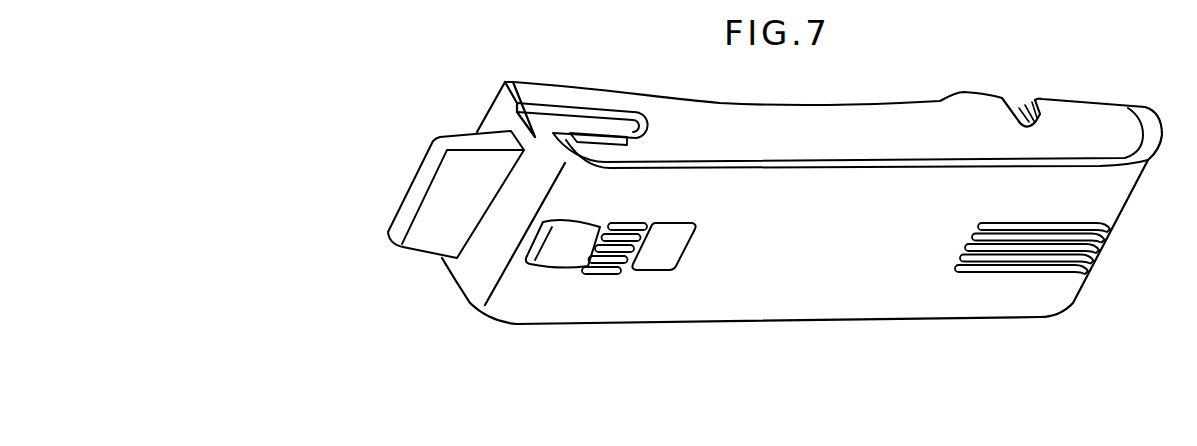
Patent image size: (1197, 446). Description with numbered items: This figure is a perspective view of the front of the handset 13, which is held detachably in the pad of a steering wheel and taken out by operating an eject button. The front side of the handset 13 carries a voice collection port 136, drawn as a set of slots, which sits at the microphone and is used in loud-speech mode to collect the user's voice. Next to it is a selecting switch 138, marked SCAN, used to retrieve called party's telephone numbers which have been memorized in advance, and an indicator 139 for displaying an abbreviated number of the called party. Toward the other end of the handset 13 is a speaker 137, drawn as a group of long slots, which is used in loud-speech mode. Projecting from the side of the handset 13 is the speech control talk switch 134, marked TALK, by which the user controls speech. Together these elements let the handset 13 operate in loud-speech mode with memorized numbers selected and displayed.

The handset 13 is at (838, 323).
The speech control talk switch 134 is at (447, 138).
The voice collection port 136 is at (597, 276).
The speaker 137 is at (997, 275).
The selecting switch 138 is at (528, 270).
The indicator 139 is at (652, 272).